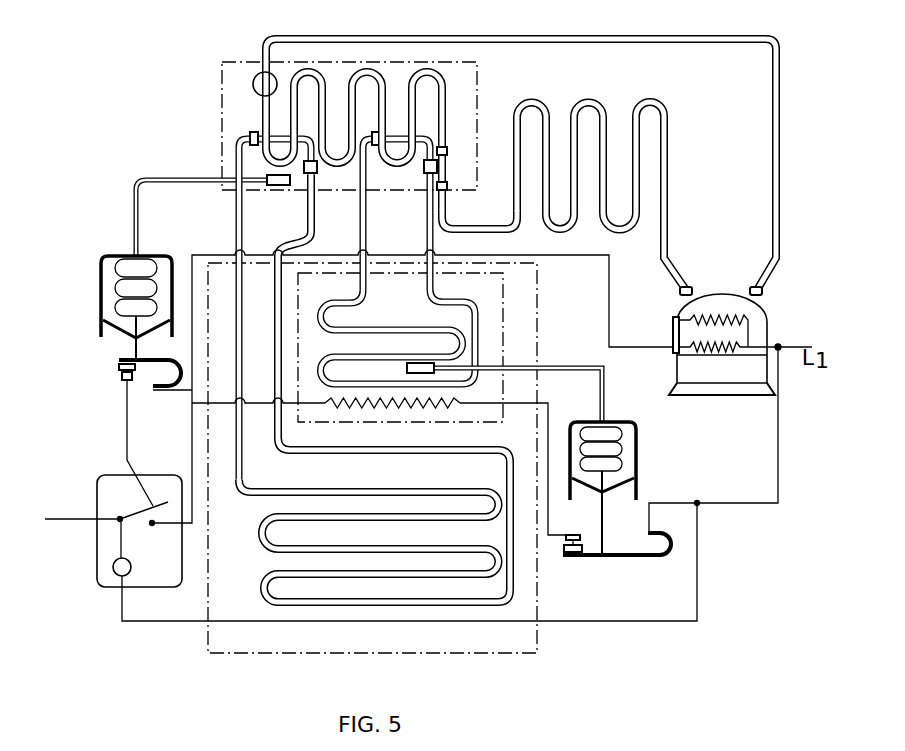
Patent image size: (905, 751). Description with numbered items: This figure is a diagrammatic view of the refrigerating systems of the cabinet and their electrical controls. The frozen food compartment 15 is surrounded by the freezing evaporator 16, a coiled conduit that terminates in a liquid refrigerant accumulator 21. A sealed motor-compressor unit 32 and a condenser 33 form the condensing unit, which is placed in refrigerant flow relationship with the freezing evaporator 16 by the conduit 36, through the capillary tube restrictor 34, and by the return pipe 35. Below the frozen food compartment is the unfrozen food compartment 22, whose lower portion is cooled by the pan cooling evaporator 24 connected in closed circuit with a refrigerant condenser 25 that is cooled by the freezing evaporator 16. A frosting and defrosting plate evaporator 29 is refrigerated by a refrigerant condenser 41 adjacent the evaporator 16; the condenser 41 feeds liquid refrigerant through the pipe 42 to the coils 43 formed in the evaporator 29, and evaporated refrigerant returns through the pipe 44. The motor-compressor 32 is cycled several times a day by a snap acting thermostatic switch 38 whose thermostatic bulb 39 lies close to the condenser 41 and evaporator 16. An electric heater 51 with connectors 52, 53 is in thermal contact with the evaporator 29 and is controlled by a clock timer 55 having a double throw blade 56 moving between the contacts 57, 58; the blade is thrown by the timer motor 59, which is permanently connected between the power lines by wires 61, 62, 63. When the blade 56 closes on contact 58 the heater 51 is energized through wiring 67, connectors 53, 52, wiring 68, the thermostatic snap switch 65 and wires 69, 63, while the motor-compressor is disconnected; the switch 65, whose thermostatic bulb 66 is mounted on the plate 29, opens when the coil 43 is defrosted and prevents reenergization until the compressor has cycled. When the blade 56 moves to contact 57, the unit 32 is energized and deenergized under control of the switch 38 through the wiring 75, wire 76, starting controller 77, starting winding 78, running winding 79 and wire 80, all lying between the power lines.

The frozen food compartment 15 is at (221, 78).
The freezing evaporator 16 is at (450, 93).
The liquid refrigerant accumulator 21 is at (258, 74).
The unfrozen food compartment 22 is at (264, 653).
The pan cooling evaporator 24 is at (378, 486).
The refrigerant condenser 25 is at (251, 134).
The frosting and defrosting plate evaporator 29 is at (396, 422).
The sealed motor-compressor unit 32 is at (676, 367).
The condenser 33 is at (579, 98).
The capillary tube restrictor 34 is at (448, 170).
The return pipe 35 is at (771, 73).
The conduit 36 is at (460, 226).
The thermostatic switch 38 is at (99, 268).
The thermostatic bulb 39 is at (287, 187).
The refrigerant condenser 41 is at (418, 164).
The pipe 42 is at (426, 223).
The coils 43 is at (369, 326).
The pipe 44 is at (359, 223).
The electric heater 51 is at (423, 408).
The connector 52 is at (522, 417).
The connector 53 is at (288, 405).
The clock timer 55 is at (112, 474).
The double throw blade 56 is at (143, 510).
The contact 57 is at (160, 499).
The contact 58 is at (154, 527).
The timer motor 59 is at (122, 578).
The wire 61 is at (120, 538).
The wire 62 is at (180, 623).
The wire 63 is at (733, 504).
The thermostatic snap switch 65 is at (639, 456).
The thermostatic bulb 66 is at (407, 367).
The wiring 67 is at (193, 492).
The wiring 68 is at (556, 534).
The wire 69 is at (652, 502).
The wiring 75 is at (128, 410).
The wire 76 is at (563, 254).
The starting controller 77 is at (672, 327).
The starting winding 78 is at (704, 317).
The running winding 79 is at (736, 349).
The wire 80 is at (771, 346).